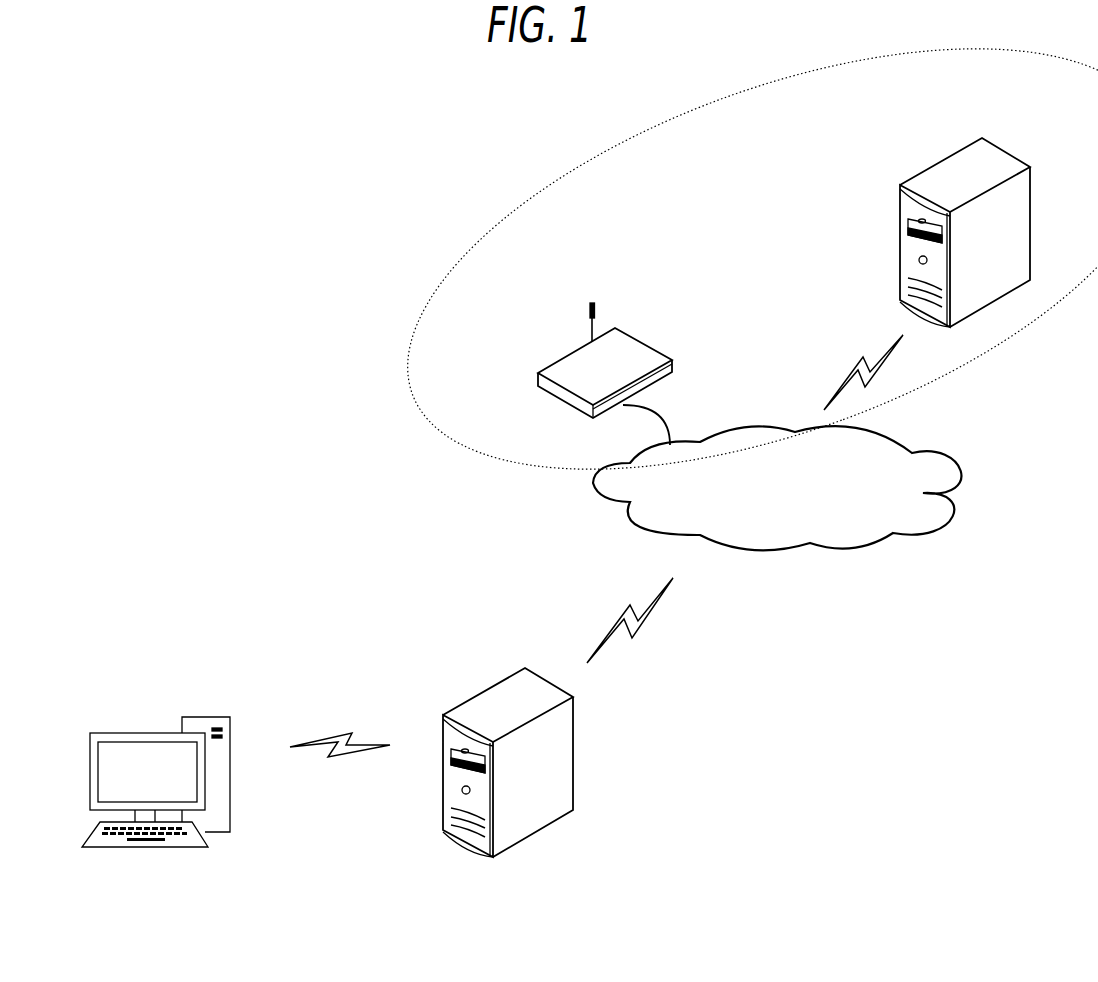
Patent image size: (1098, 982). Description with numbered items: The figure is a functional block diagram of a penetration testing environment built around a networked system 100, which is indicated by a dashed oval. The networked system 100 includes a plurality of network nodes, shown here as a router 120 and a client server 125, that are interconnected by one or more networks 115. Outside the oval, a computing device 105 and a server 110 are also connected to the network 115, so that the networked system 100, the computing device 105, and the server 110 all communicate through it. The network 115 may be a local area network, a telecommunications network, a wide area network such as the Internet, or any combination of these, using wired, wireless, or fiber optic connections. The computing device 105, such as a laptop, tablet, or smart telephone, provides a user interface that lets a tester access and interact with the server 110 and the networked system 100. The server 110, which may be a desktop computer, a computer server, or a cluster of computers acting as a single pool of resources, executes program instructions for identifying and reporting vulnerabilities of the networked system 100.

The networked system 100 is at (408, 353).
The computing device 105 is at (152, 848).
The server 110 is at (555, 687).
The network 115 is at (962, 472).
The router 120 is at (537, 380).
The client server 125 is at (1013, 160).